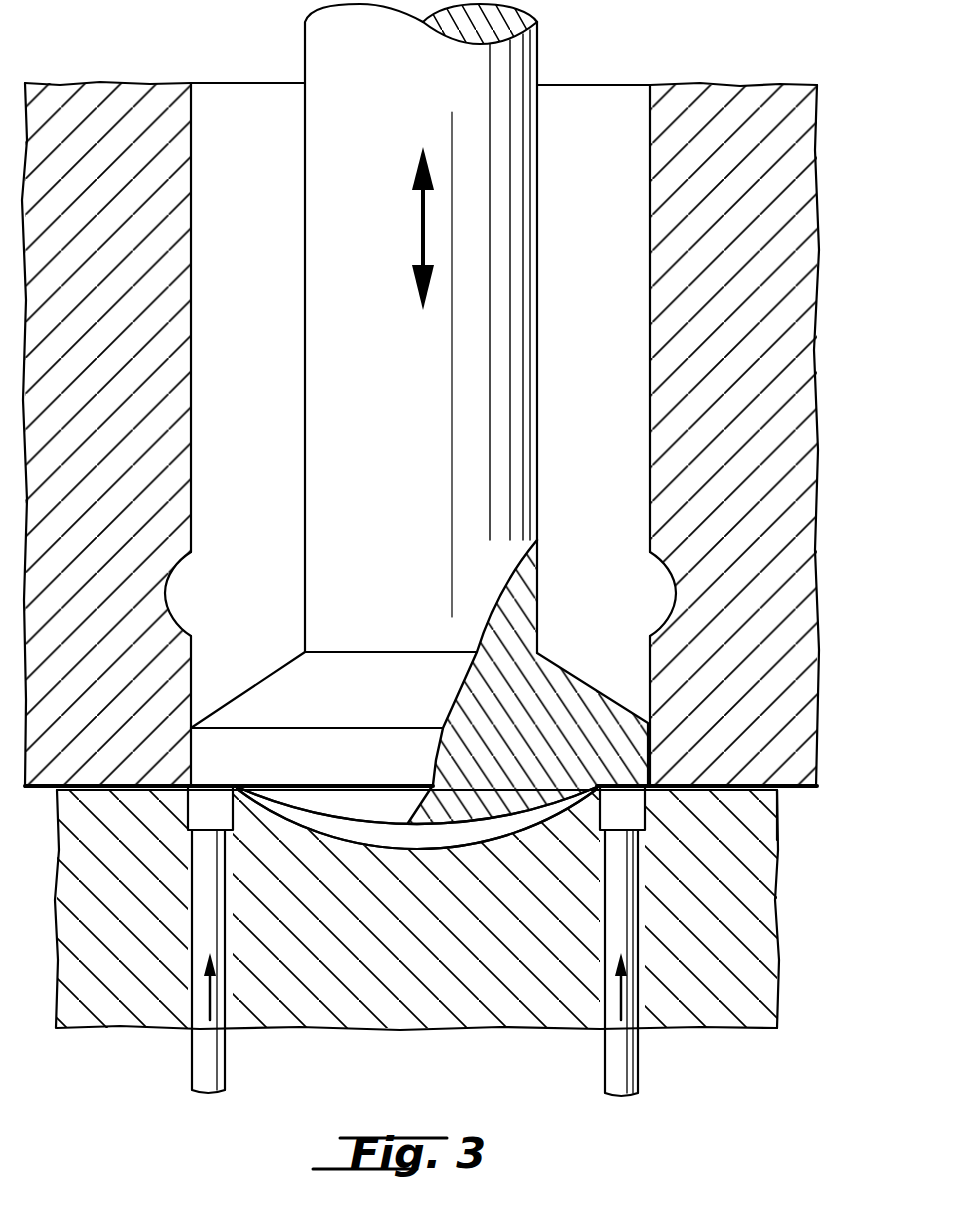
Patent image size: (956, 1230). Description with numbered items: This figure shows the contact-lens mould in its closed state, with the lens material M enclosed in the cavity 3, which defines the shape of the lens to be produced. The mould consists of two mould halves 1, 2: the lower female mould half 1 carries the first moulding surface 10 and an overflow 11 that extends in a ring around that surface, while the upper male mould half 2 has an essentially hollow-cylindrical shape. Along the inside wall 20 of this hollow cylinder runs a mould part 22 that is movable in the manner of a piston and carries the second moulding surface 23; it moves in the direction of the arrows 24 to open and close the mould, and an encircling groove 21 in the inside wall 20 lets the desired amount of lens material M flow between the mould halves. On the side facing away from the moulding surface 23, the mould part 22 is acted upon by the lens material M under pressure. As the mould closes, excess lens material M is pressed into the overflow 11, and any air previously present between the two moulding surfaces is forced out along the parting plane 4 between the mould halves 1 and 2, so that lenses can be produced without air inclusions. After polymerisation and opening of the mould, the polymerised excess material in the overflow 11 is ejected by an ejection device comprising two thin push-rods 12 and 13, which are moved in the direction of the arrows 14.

The mould half 1 is at (795, 921).
The mould half 2 is at (835, 325).
The cavity 3 is at (420, 838).
The parting plane 4 is at (779, 830).
The first moulding surface 10 is at (317, 830).
The overflow 11 is at (224, 805).
The push-rod 12 is at (205, 1065).
The push-rod 13 is at (622, 1075).
The arrows 14 is at (213, 1000).
The inside wall 20 is at (198, 385).
The encircling groove 21 is at (172, 600).
The mould part 22 is at (325, 47).
The second moulding surface 23 is at (366, 843).
The arrows 24 is at (423, 229).
The lens material M is at (583, 95).